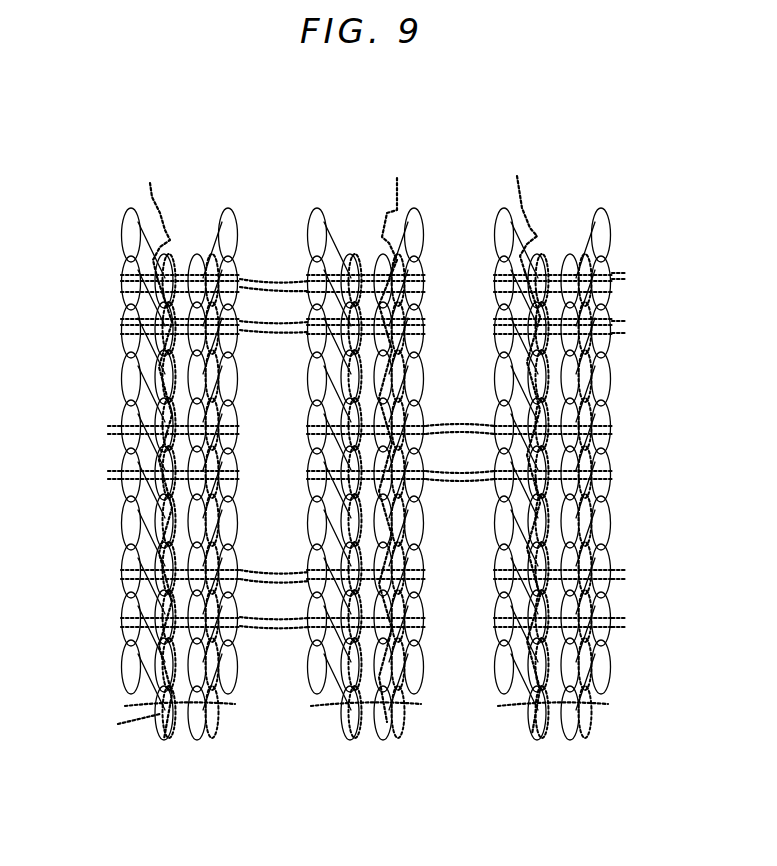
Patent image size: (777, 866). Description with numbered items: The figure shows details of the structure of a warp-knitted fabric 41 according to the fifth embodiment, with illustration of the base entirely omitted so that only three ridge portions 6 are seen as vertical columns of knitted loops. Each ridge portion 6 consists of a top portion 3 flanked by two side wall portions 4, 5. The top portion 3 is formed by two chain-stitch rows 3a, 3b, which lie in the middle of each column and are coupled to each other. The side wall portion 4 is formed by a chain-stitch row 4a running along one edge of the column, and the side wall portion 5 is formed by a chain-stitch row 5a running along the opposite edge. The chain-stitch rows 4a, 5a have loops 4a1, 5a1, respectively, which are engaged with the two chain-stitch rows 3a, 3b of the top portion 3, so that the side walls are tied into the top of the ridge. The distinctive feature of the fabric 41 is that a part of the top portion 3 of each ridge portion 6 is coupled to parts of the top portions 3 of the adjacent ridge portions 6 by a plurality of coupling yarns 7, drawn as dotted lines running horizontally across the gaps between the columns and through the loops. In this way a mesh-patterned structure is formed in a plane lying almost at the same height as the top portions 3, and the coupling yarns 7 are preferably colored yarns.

The warp-knitted fabric 41 is at (72, 126).
The ridge portion 6 is at (188, 187).
The coupling yarn 7 is at (342, 446).
The chain-stitch row 4a is at (129, 210).
The loop 4a1 is at (150, 692).
The side wall portion 4 is at (131, 709).
The chain-stitch row 5a is at (227, 217).
The loop 5a1 is at (218, 706).
The side wall portion 5 is at (235, 705).
The top portion 3 is at (180, 738).
The chain-stitch row 3a is at (159, 740).
The chain-stitch row 3b is at (204, 748).